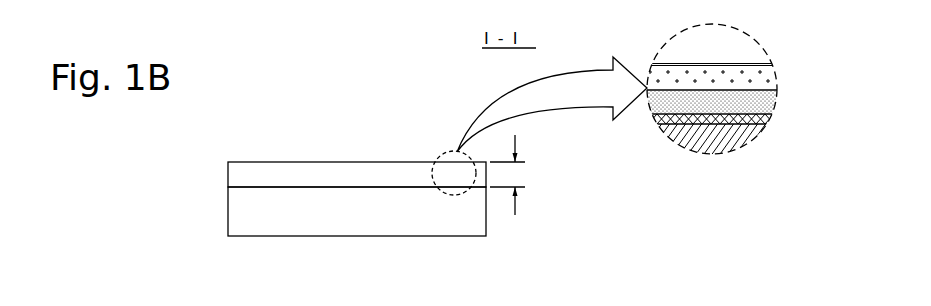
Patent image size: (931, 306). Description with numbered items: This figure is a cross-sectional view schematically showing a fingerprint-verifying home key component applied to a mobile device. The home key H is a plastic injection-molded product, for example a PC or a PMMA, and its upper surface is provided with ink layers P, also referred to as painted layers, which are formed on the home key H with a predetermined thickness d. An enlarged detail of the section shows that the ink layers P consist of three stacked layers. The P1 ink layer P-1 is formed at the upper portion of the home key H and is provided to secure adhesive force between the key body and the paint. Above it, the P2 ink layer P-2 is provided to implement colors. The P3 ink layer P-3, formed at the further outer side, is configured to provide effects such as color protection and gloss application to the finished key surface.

The ink layers P is at (240, 174).
The home key H is at (240, 218).
The P1 ink layer P-1 is at (765, 120).
The P2 ink layer P-2 is at (770, 98).
The P3 ink layer P-3 is at (770, 75).
The thickness d is at (517, 175).